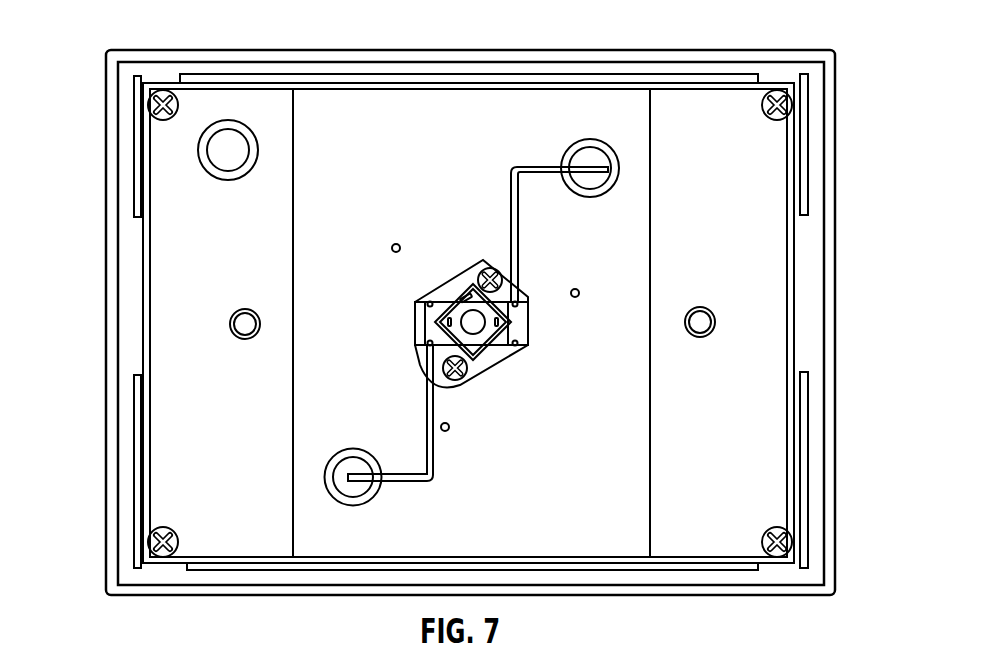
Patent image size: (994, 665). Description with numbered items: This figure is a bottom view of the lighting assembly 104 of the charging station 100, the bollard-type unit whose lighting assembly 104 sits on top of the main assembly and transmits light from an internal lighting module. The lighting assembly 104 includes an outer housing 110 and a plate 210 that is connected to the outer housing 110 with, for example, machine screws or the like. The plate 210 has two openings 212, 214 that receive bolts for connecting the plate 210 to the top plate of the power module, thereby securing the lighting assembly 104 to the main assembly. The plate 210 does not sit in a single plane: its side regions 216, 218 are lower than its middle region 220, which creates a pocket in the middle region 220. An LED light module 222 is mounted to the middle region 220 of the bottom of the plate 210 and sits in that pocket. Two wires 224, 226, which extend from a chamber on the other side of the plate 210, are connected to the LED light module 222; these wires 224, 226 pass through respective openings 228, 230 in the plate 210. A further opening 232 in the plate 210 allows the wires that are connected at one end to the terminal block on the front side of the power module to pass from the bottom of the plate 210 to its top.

The charging station 100 is at (150, 657).
The lighting assembly 104 is at (810, 27).
The outer housing 110 is at (828, 500).
The plate 210 is at (775, 422).
The opening 212 is at (245, 320).
The opening 214 is at (700, 318).
The side region 216 is at (163, 472).
The side region 218 is at (775, 178).
The middle region 220 is at (413, 118).
The LED light module 222 is at (487, 353).
The wire 224 is at (518, 242).
The wire 226 is at (403, 482).
The opening 228 is at (590, 140).
The opening 230 is at (613, 158).
The opening 232 is at (228, 142).